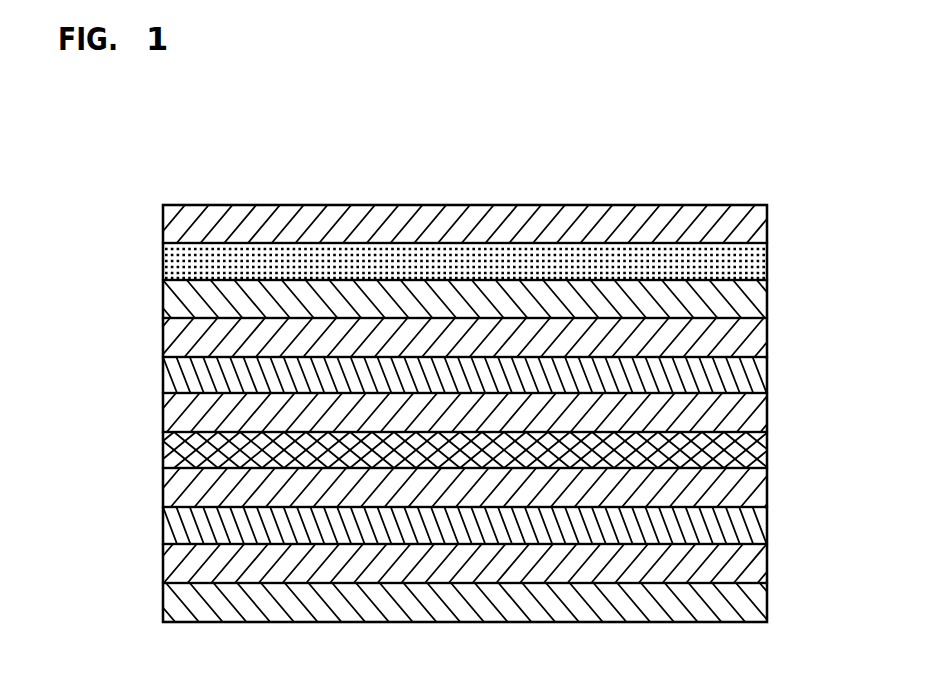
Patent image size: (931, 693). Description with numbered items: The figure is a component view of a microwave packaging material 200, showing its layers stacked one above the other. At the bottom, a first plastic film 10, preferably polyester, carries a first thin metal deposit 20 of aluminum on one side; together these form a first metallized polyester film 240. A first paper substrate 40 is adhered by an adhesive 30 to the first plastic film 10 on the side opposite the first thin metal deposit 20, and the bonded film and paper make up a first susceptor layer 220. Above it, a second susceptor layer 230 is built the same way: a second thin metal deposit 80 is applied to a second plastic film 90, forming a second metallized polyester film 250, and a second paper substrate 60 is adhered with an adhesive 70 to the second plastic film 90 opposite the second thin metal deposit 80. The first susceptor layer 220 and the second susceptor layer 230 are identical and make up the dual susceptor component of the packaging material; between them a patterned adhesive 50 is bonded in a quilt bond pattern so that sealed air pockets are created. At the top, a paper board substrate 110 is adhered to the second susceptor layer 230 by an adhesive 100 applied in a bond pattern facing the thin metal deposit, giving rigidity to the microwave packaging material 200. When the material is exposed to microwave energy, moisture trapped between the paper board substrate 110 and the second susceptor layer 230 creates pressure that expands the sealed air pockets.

The microwave packaging material 200 is at (769, 96).
The paper board substrate 110 is at (767, 225).
The adhesive 100 is at (767, 262).
The second plastic film 90 is at (767, 300).
The second thin metal deposit 80 is at (767, 338).
The adhesive 70 is at (767, 376).
The second paper substrate 60 is at (767, 413).
The patterned adhesive 50 is at (767, 451).
The first paper substrate 40 is at (767, 489).
The adhesive 30 is at (767, 527).
The first thin metal deposit 20 is at (767, 565).
The first plastic film 10 is at (767, 603).
The second susceptor layer 230 is at (118, 283).
The second metallized polyester film 250 is at (162, 283).
The first susceptor layer 220 is at (118, 473).
The first metallized polyester film 240 is at (162, 545).